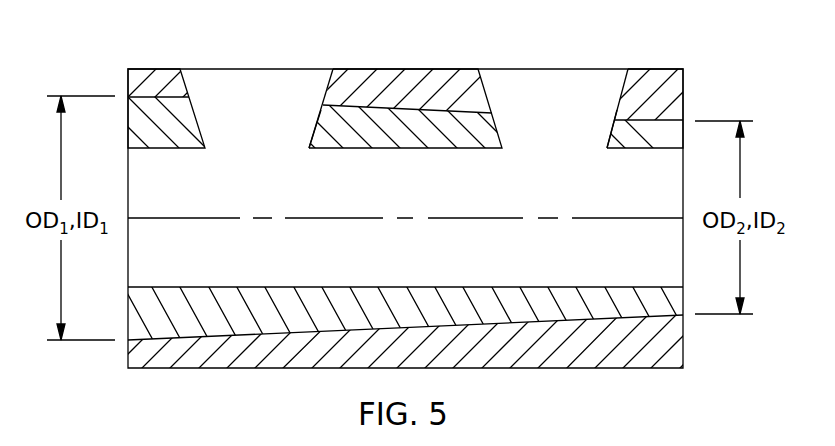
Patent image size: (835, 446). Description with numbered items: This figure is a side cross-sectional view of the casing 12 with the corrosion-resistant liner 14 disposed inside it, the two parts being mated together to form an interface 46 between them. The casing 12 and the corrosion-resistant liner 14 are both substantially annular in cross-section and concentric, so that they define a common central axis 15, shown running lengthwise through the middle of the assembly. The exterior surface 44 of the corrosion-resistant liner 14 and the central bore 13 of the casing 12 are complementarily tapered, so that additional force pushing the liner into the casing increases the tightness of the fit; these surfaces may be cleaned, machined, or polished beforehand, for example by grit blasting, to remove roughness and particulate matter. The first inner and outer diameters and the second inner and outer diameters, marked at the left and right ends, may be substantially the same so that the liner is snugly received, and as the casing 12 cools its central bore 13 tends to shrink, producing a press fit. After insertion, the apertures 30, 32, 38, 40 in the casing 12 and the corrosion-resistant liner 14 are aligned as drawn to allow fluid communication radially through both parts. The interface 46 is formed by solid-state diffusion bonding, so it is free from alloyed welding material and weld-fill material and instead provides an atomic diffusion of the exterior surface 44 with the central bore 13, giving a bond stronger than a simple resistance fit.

The casing 12 is at (375, 80).
The central bore 13 is at (428, 325).
The corrosion-resistant liner 14 is at (457, 143).
The central axis 15 is at (369, 218).
The aperture 30 is at (313, 130).
The aperture 32 is at (613, 132).
The aperture 38 is at (328, 83).
The aperture 40 is at (626, 87).
The exterior surface 44 is at (453, 112).
The interface 46 is at (562, 320).